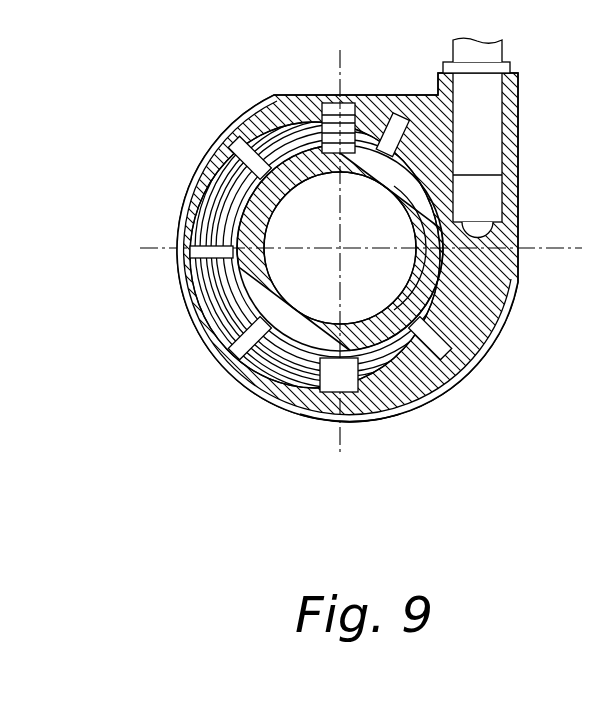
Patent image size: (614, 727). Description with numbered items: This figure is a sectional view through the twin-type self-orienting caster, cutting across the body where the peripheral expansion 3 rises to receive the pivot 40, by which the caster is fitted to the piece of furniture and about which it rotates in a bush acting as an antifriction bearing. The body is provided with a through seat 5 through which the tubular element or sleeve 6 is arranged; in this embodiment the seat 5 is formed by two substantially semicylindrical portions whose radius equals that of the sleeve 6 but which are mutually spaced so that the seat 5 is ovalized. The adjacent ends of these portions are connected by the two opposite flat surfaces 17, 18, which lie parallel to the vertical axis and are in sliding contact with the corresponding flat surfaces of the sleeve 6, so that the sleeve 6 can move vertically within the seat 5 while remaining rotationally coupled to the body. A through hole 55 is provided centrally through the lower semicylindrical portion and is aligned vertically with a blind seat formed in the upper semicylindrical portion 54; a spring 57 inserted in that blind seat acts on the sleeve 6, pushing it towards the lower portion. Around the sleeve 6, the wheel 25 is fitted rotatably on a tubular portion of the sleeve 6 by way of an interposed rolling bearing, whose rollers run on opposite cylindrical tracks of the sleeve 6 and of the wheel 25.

The peripheral expansion 3 is at (510, 98).
The through seat 5 is at (290, 172).
The sleeve 6 is at (295, 320).
The flat surface 17 is at (263, 237).
The flat surface 18 is at (413, 238).
The wheel 25 is at (379, 420).
The pivot 40 is at (486, 143).
The upper semicylindrical portion 54 is at (375, 122).
The through hole 55 is at (332, 393).
The spring 57 is at (330, 95).